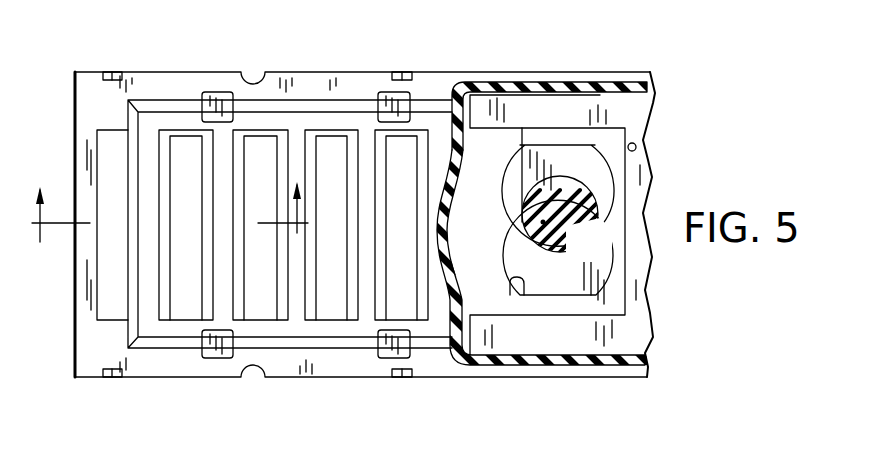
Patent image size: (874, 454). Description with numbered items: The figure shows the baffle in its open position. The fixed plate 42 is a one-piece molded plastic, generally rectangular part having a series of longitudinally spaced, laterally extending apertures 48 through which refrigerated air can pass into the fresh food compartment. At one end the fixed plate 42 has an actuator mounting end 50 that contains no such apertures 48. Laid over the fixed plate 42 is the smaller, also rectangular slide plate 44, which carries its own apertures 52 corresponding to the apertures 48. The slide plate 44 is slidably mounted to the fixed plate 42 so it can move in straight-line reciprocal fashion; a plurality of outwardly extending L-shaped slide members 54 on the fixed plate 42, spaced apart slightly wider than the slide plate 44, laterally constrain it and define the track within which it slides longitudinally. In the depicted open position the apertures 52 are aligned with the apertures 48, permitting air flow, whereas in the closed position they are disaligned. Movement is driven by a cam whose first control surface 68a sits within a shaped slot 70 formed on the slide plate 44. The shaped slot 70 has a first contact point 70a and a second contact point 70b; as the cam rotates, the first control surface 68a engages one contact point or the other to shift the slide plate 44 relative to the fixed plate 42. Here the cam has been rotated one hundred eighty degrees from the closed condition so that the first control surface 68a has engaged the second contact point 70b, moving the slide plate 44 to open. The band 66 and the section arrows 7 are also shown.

The fixed plate 42 is at (163, 84).
The slide plate 44 is at (143, 265).
The apertures 48 is at (104, 322).
The apertures 52 is at (257, 322).
The L-shaped slide members 54 is at (227, 92).
The hatched band 66 is at (573, 366).
The actuator mounting end 50 is at (642, 295).
The first control surface 68a is at (567, 227).
The shaped slot 70 is at (516, 285).
The first contact point 70a is at (522, 128).
The second contact point 70b is at (603, 218).
The section line 7 is at (170, 224).